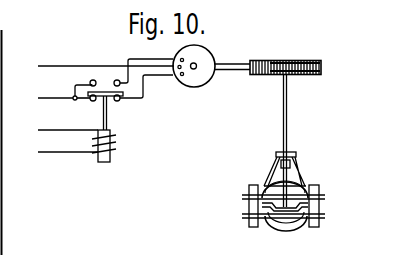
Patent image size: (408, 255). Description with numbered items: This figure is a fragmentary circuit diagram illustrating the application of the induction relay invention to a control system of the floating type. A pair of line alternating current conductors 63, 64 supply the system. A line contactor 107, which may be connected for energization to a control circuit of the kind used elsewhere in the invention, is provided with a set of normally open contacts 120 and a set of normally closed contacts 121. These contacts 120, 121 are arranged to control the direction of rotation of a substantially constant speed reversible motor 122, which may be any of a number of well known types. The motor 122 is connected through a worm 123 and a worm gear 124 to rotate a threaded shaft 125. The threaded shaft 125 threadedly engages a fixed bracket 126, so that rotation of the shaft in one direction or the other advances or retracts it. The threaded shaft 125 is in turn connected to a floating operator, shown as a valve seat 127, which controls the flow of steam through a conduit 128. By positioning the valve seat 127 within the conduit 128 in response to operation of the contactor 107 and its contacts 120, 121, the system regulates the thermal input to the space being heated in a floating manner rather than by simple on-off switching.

The line alternating current conductor 63 is at (53, 65).
The line alternating current conductor 64 is at (48, 97).
The line contactor 107 is at (109, 125).
The normally open contacts 120 is at (89, 80).
The normally closed contacts 121 is at (120, 100).
The reversible motor 122 is at (198, 84).
The worm 123 is at (286, 60).
The worm gear 124 is at (317, 75).
The threaded shaft 125 is at (288, 152).
The fixed bracket 126 is at (270, 167).
The valve seat 127 is at (287, 231).
The conduit 128 is at (248, 198).